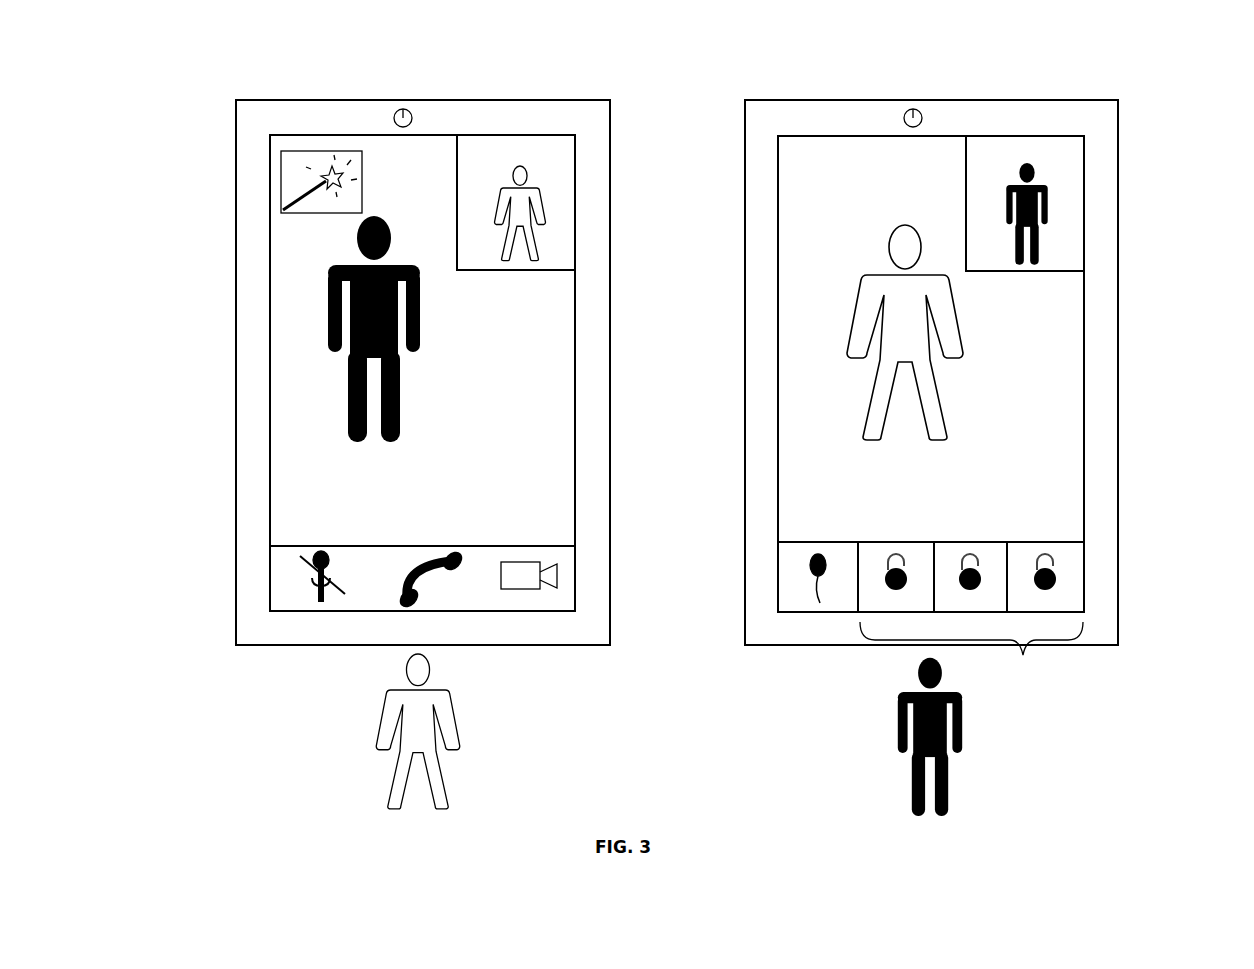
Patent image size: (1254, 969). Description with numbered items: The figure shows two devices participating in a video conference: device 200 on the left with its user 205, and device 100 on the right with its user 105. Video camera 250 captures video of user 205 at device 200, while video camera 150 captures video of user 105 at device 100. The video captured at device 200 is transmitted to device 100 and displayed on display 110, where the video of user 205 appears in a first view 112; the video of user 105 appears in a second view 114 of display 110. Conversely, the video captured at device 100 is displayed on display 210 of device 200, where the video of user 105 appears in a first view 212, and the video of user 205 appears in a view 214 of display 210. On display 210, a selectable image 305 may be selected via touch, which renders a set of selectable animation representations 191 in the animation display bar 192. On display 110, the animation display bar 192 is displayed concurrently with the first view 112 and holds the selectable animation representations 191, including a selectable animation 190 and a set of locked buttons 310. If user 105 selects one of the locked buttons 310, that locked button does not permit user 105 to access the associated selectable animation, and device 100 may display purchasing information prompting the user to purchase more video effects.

The device 100 is at (1017, 88).
The user 105 is at (950, 841).
The display 110 is at (843, 136).
The first view 112 is at (1063, 323).
The second view 114 is at (1067, 252).
The video camera 150 is at (913, 110).
The selectable animation 190 is at (822, 603).
The set of selectable animation representations 191 is at (982, 530).
The animation display bar 192 is at (1070, 597).
The device 200 is at (466, 90).
The user 205 is at (437, 842).
The display 210 is at (325, 134).
The first view 212 is at (552, 345).
The view 214 is at (550, 248).
The video camera 250 is at (403, 111).
The selectable image 305 is at (295, 150).
The set of locked buttons 310 is at (971, 658).